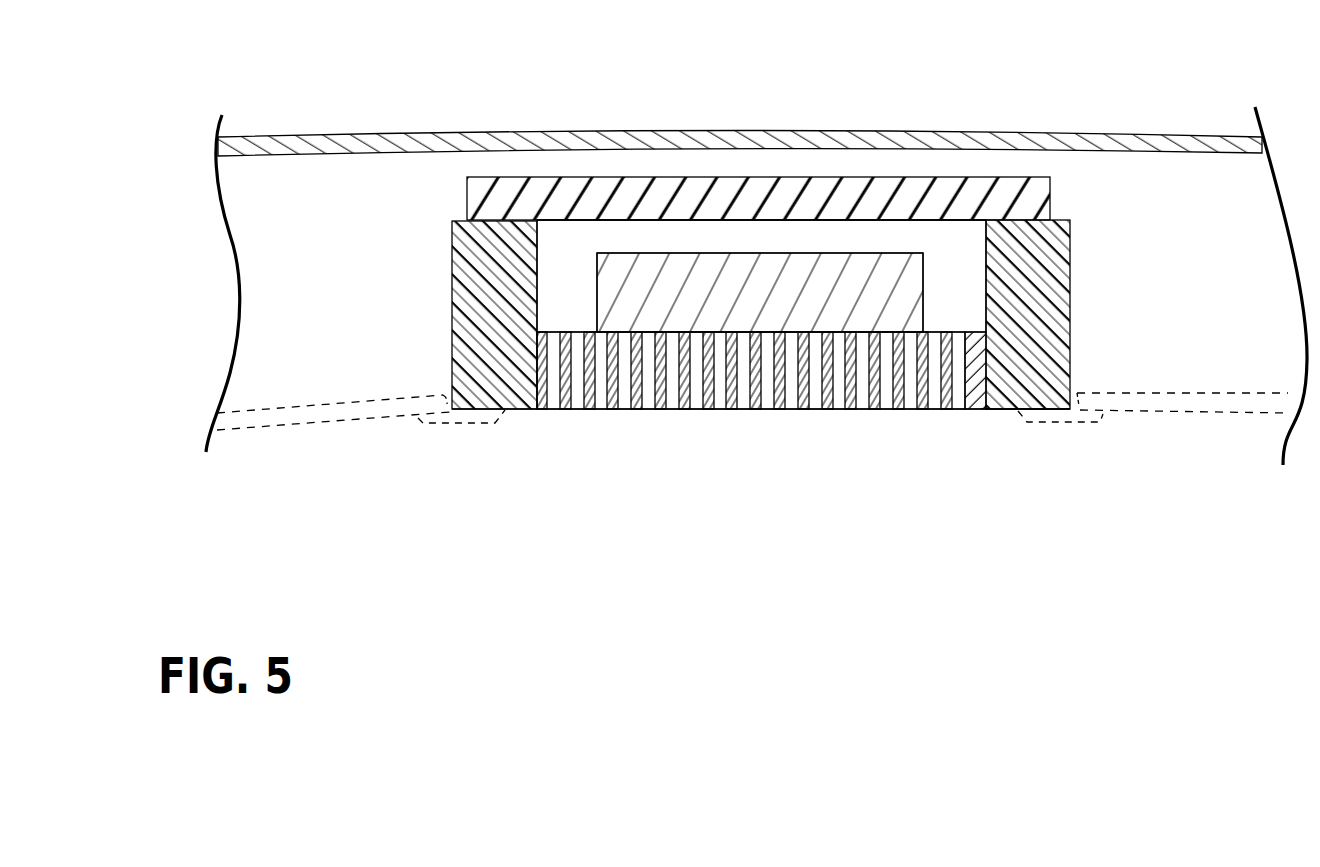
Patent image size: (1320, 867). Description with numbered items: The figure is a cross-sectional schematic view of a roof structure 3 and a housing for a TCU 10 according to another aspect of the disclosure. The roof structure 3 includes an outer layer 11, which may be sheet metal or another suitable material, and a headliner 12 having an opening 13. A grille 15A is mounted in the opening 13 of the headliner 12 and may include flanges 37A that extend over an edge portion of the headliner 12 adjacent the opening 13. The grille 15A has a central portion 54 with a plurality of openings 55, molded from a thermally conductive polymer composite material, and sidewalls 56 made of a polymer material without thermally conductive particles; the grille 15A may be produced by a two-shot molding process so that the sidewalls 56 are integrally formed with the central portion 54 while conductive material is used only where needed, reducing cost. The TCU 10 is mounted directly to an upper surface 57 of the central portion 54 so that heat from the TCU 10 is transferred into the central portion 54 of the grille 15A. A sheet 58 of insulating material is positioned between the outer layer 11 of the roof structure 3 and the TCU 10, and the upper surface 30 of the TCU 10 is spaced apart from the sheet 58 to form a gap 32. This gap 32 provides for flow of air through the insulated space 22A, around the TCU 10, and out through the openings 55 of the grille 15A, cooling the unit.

The roof structure 3 is at (756, 256).
The TCU 10 is at (872, 304).
The outer layer 11 is at (1193, 135).
The headliner 12 is at (1218, 412).
The opening 13 is at (1077, 413).
The grille 15A is at (916, 410).
The insulated space 22A is at (552, 273).
The upper surface 30 is at (760, 197).
The gap 32 is at (779, 237).
The flanges 37A is at (418, 420).
The central portion 54 is at (780, 410).
The openings 55 is at (815, 400).
The sidewalls 56 is at (467, 343).
The upper surface 57 is at (943, 332).
The sheet 58 is at (1040, 200).